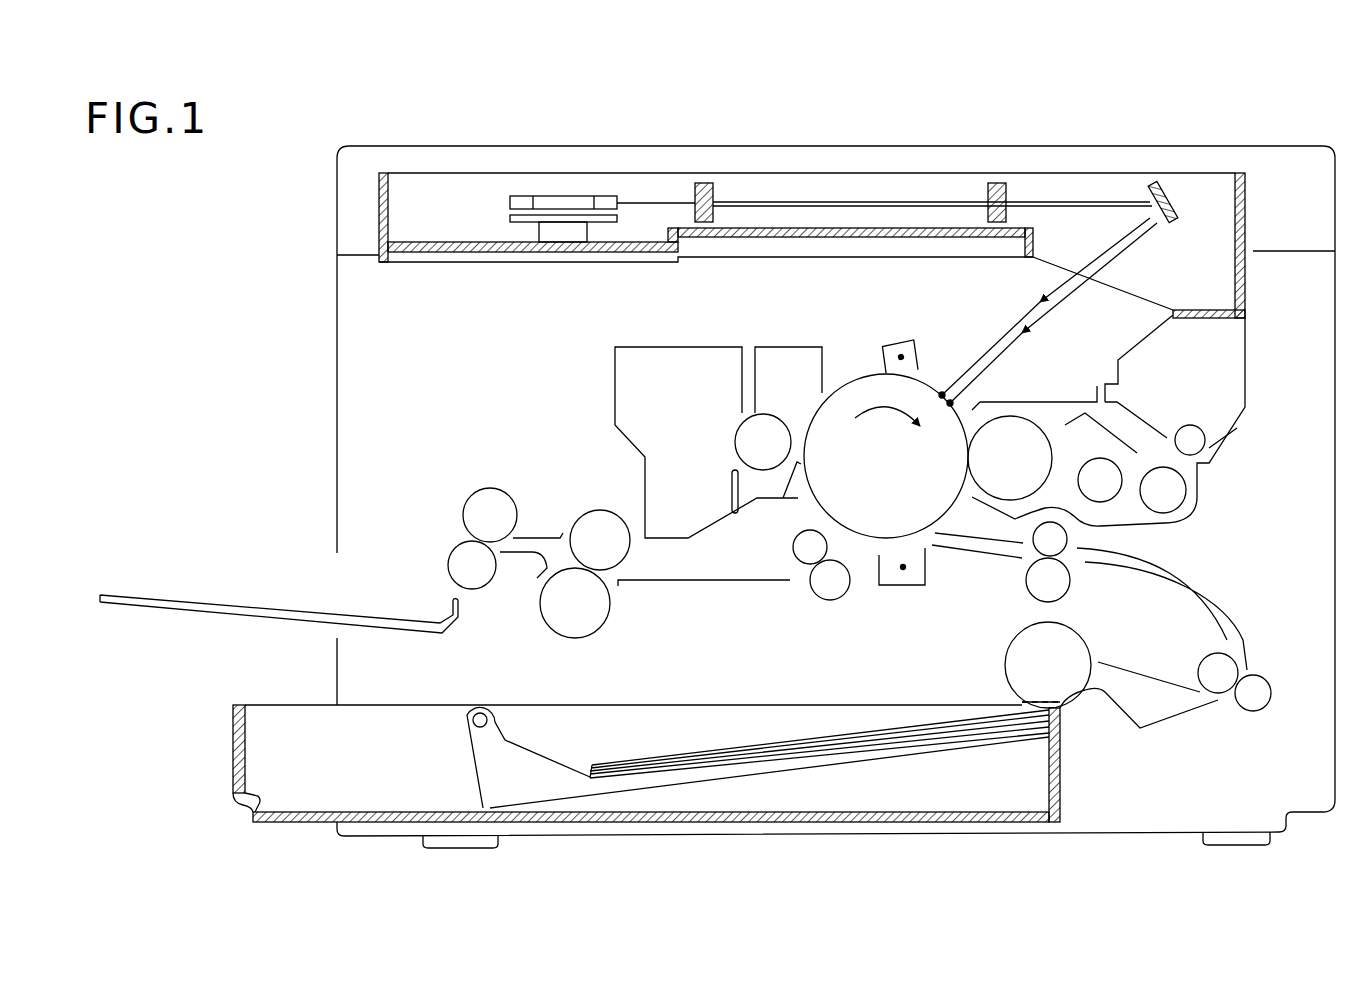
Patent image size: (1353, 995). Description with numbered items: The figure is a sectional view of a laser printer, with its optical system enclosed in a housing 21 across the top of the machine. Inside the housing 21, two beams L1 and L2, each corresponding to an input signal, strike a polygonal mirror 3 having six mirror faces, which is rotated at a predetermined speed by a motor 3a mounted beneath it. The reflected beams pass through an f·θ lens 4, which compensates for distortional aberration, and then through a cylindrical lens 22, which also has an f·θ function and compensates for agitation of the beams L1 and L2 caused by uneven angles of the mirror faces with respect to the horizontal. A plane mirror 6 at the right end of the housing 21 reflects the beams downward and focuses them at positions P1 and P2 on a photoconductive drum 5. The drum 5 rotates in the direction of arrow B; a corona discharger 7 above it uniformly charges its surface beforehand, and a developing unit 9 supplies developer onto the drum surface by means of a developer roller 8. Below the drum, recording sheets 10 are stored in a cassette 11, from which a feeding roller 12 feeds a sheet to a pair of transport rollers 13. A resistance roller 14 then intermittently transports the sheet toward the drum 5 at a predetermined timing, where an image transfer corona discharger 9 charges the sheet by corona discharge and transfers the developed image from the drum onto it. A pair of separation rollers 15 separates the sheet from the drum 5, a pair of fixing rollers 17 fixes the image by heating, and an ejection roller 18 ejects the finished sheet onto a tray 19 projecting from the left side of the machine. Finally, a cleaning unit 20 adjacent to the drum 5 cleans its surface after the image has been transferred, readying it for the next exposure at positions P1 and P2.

The polygonal mirror 3 is at (510, 203).
The motor 3a is at (560, 242).
The f·θ lens 4 is at (702, 183).
The photoconductive drum 5 is at (865, 532).
The plane mirror 6 is at (1163, 186).
The corona discharger 7 is at (895, 341).
The developer roller 8 is at (993, 483).
The developing unit / image transfer corona discharger 9 is at (1208, 497).
The recording sheets 10 is at (760, 760).
The cassette 11 is at (897, 775).
The feeding roller 12 is at (1078, 696).
The transport rollers 13 is at (1250, 678).
The resistance roller 14 is at (1060, 585).
The separation rollers 15 is at (820, 580).
The fixing rollers 17 is at (598, 600).
The ejection roller 18 is at (465, 560).
The tray 19 is at (168, 603).
The cleaning unit 20 is at (604, 393).
The housing 21 is at (379, 200).
The cylindrical lens 22 is at (996, 183).
The arrow B is at (885, 411).
The beam L1 is at (1015, 338).
The beam L2 is at (1007, 332).
The position P1 is at (952, 402).
The position P2 is at (942, 391).